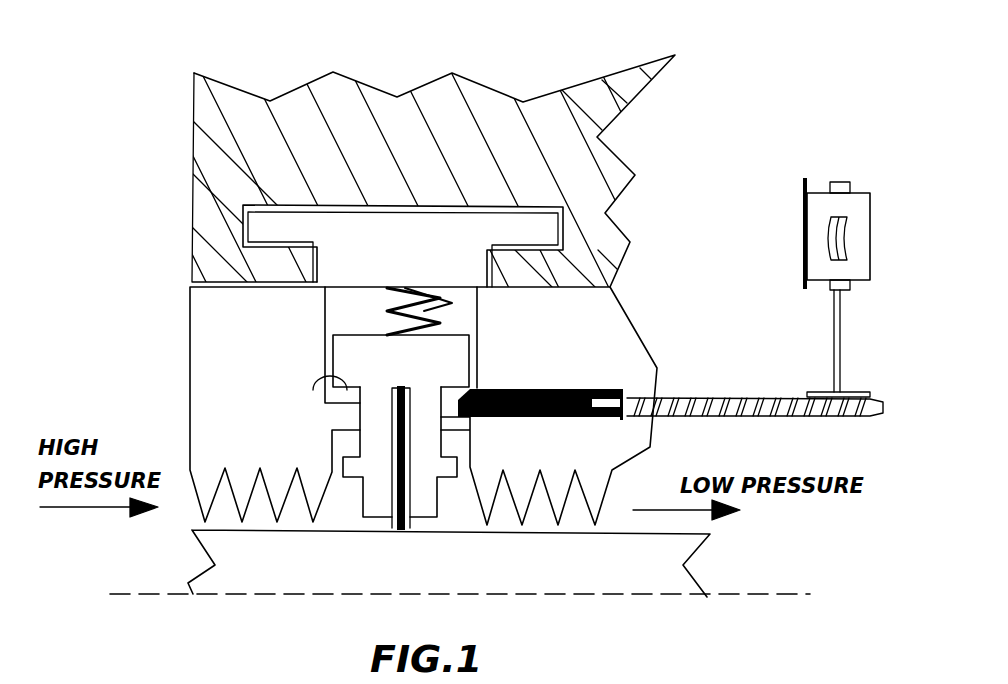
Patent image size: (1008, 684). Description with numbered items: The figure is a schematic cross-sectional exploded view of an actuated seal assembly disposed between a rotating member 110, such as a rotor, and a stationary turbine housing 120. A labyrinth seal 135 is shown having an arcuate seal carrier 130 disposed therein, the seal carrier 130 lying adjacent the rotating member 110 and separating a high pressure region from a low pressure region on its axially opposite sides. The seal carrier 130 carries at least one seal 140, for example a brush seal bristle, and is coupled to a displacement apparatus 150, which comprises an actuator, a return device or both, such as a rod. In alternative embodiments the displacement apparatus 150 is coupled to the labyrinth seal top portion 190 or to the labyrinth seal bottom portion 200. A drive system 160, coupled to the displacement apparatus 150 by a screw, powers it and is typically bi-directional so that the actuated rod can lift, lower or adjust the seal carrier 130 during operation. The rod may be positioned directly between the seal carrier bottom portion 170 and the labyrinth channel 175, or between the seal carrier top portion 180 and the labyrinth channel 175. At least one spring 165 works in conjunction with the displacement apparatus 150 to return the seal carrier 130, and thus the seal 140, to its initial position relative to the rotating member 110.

The rotating member 110 is at (243, 547).
The stationary turbine housing 120 is at (213, 154).
The arcuate seal carrier 130 is at (345, 348).
The labyrinth seal 135 is at (426, 250).
The seal 140 is at (397, 529).
The displacement apparatus 150 is at (553, 417).
The drive system 160 is at (820, 190).
The spring 165 is at (424, 284).
The seal carrier bottom portion 170 is at (313, 390).
The labyrinth channel 175 is at (318, 325).
The seal carrier top portion 180 is at (464, 335).
The labyrinth seal top portion 190 is at (490, 207).
The labyrinth seal bottom portion 200 is at (515, 253).